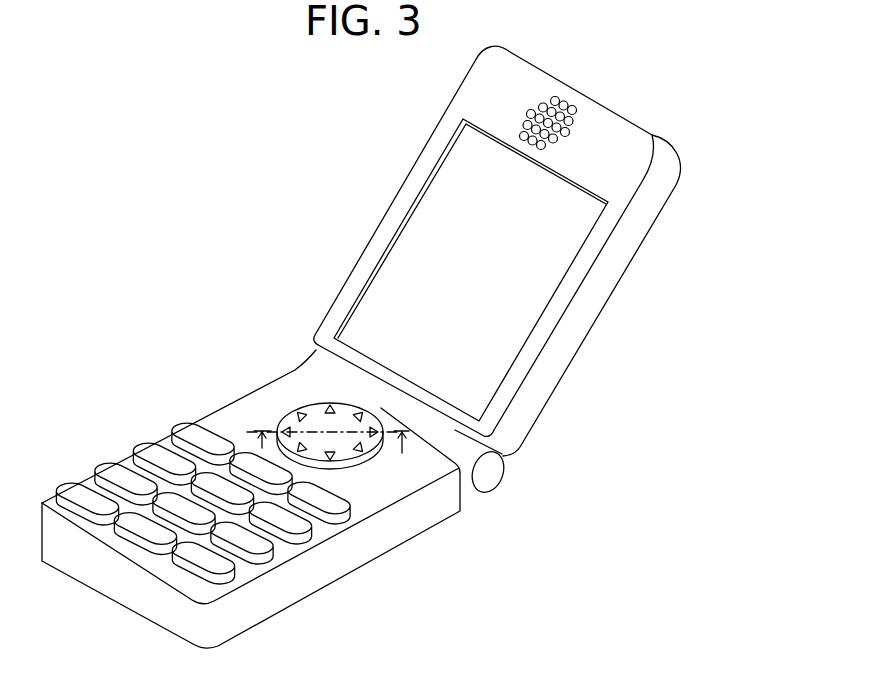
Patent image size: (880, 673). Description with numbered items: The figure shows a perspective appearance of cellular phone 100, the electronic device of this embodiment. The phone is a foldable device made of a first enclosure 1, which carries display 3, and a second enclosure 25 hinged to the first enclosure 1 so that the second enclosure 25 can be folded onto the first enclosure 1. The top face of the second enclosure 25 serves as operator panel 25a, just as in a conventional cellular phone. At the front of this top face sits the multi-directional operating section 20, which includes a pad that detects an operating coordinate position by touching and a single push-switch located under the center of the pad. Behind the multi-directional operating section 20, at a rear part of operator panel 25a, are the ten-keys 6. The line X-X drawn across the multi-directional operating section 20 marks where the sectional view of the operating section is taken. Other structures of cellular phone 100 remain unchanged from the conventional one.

The cellular phone 100 is at (668, 135).
The first enclosure 1 is at (408, 177).
The display 3 is at (563, 268).
The second enclosure 25 is at (247, 405).
The operator panel 25a is at (282, 385).
The ten-keys 6 is at (300, 533).
The multi-directional operating section 20 is at (350, 455).